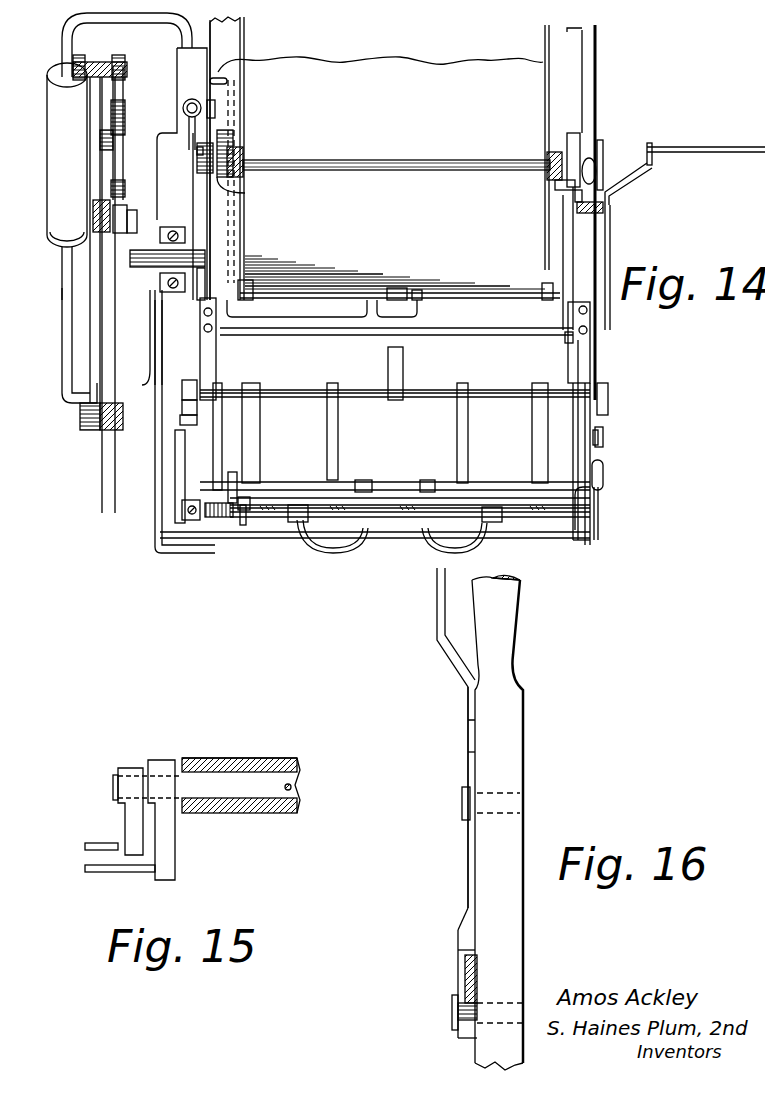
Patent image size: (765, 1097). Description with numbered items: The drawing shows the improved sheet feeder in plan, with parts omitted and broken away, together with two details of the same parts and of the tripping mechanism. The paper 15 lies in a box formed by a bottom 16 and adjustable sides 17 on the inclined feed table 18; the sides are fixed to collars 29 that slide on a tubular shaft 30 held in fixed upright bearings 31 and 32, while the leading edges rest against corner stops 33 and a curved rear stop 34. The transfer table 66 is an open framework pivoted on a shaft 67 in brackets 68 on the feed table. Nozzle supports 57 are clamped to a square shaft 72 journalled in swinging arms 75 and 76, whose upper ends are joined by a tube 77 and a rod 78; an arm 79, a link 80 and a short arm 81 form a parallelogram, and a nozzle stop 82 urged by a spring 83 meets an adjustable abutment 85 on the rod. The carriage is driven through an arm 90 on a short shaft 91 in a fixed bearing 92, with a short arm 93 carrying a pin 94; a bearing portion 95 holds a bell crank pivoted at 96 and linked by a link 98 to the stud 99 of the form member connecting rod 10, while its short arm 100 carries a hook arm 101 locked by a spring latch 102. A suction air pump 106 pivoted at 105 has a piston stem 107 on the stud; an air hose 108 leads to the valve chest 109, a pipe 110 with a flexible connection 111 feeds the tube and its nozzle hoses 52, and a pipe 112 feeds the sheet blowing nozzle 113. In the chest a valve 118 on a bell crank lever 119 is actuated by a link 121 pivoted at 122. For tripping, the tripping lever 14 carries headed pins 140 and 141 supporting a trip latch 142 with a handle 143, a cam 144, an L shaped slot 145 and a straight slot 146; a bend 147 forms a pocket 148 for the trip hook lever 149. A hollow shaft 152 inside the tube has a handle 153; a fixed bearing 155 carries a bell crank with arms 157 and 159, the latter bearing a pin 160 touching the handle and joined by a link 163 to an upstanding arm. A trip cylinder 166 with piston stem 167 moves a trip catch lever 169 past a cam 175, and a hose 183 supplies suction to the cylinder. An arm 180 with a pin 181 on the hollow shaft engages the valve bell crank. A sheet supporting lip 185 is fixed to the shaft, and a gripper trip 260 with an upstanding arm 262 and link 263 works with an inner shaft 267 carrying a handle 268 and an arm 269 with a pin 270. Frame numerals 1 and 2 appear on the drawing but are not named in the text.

In FIG. 14, the machine 1 is at (620, 212).
In FIG. 14, the base 2 is at (599, 556).
In FIG. 14, the form member connecting rod 10 is at (108, 487).
In FIG. 16, the tripping lever 14 is at (497, 822).
In FIG. 14, the paper 15 is at (393, 275).
In FIG. 14, the bottom 16 is at (562, 70).
In FIG. 14, the adjustable sides 17 is at (545, 78).
In FIG. 14, the inclined feed table 18 is at (143, 362).
In FIG. 14, the collars 29 is at (550, 150).
In FIG. 14, the tubular shaft 30 is at (417, 163).
In FIG. 15, the tubular shaft 30 is at (250, 758).
In FIG. 14, the upright bearing 31 is at (222, 182).
In FIG. 14, the upright bearing 32 is at (572, 180).
In FIG. 14, the corner stops 33 is at (542, 287).
In FIG. 14, the curved rear stop 34 is at (397, 290).
In FIG. 14, the nozzle hoses 52 is at (430, 548).
In FIG. 14, the nozzle supports 57 is at (493, 522).
In FIG. 14, the transfer table 66 is at (430, 397).
In FIG. 14, the shaft 67 is at (508, 390).
In FIG. 14, the brackets 68 is at (590, 357).
In FIG. 14, the shaft 72 is at (378, 510).
In FIG. 14, the swinging arm 75 is at (202, 523).
In FIG. 14, the swinging arm 76 is at (590, 545).
In FIG. 14, the tube 77 is at (252, 537).
In FIG. 14, the rod 78 is at (280, 502).
In FIG. 14, the arm 79 is at (170, 525).
In FIG. 14, the link 80 is at (182, 520).
In FIG. 14, the short arm 81 is at (185, 412).
In FIG. 14, the nozzle stop 82 is at (233, 478).
In FIG. 14, the spring 83 is at (190, 522).
In FIG. 14, the adjustable abutment 85 is at (240, 522).
In FIG. 14, the arm 90 is at (198, 292).
In FIG. 14, the short shaft 91 is at (132, 268).
In FIG. 14, the fixed bearing 92 is at (172, 227).
In FIG. 14, the short arm 93 is at (137, 233).
In FIG. 14, the pin 94 is at (117, 230).
In FIG. 14, the bearing portion 95 is at (127, 127).
In FIG. 14, the pivot 96 is at (100, 140).
In FIG. 14, the link 98 is at (97, 330).
In FIG. 14, the stud 99 is at (82, 417).
In FIG. 14, the short arm 100 is at (108, 170).
In FIG. 14, the hook arm 101 is at (133, 227).
In FIG. 14, the spring latch 102 is at (57, 290).
In FIG. 14, the pivot 105 is at (98, 62).
In FIG. 14, the suction air pump 106 is at (67, 155).
In FIG. 14, the piston stem 107 is at (67, 363).
In FIG. 14, the air hose 108 is at (72, 25).
In FIG. 14, the valve chest 109 is at (192, 60).
In FIG. 14, the pipe 110 is at (182, 537).
In FIG. 14, the flexible connection 111 is at (162, 357).
In FIG. 14, the pipe 112 is at (300, 297).
In FIG. 14, the sheet blowing nozzle 113 is at (417, 295).
In FIG. 14, the valve 118 is at (203, 108).
In FIG. 14, the bell crank lever 119 is at (215, 135).
In FIG. 14, the link 121 is at (205, 220).
In FIG. 14, the pivot 122 is at (183, 383).
In FIG. 16, the headed pin 140 is at (462, 802).
In FIG. 16, the headed pin 141 is at (452, 1002).
In FIG. 16, the trip latch 142 is at (468, 692).
In FIG. 16, the handle 143 is at (437, 615).
In FIG. 16, the cam 144 is at (465, 1020).
In FIG. 16, the L shaped slot 145 is at (468, 752).
In FIG. 16, the straight slot 146 is at (468, 953).
In FIG. 16, the bend 147 is at (467, 907).
In FIG. 16, the pocket 148 is at (462, 928).
In FIG. 16, the trip hook lever 149 is at (465, 973).
In FIG. 15, the hollow shaft 152 is at (197, 760).
In FIG. 14, the handle 153 is at (590, 157).
In FIG. 14, the fixed bearing 155 is at (577, 203).
In FIG. 14, the bell crank arm 157 is at (605, 208).
In FIG. 14, the bell crank arm 159 is at (635, 178).
In FIG. 14, the pin 160 is at (706, 150).
In FIG. 14, the link 163 is at (611, 225).
In FIG. 14, the trip cylinder 166 is at (603, 472).
In FIG. 14, the piston stem 167 is at (603, 447).
In FIG. 14, the trip catch lever 169 is at (603, 427).
In FIG. 14, the cam 175 is at (608, 405).
In FIG. 15, the arm 180 is at (165, 842).
In FIG. 14, the pin 181 is at (191, 118).
In FIG. 15, the pin 181 is at (138, 875).
In FIG. 14, the hose 183 is at (598, 522).
In FIG. 14, the sheet supporting lip 185 is at (404, 360).
In FIG. 14, the gripper trip 260 is at (465, 335).
In FIG. 14, the upstanding arm 262 is at (568, 337).
In FIG. 14, the link 263 is at (574, 258).
In FIG. 15, the shaft 267 is at (244, 791).
In FIG. 14, the handle 268 is at (600, 185).
In FIG. 15, the arm 269 is at (128, 818).
In FIG. 14, the pin 270 is at (197, 152).
In FIG. 15, the pin 270 is at (85, 845).